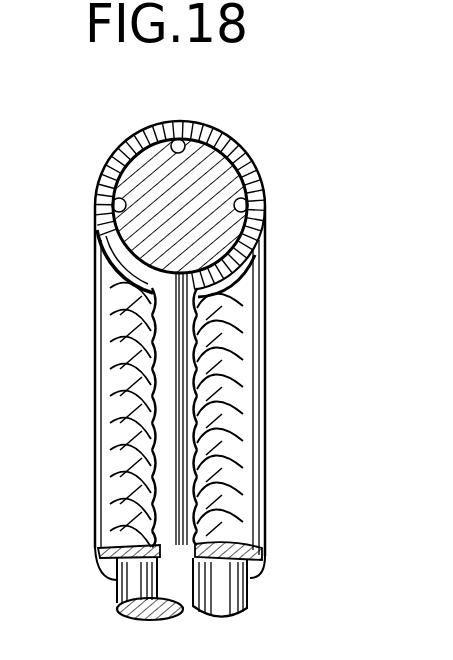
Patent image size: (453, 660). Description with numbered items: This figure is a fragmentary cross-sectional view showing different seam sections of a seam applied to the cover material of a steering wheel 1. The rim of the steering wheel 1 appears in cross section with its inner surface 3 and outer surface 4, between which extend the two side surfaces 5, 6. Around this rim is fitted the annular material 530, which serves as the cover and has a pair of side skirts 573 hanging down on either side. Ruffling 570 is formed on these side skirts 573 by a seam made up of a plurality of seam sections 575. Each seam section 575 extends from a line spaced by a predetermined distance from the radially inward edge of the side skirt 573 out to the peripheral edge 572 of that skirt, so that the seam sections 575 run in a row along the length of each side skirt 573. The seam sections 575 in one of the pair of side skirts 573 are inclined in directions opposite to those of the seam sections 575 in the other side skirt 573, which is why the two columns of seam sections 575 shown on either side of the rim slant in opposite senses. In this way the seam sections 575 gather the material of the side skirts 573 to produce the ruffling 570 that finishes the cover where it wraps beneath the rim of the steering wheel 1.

The steering wheel 1 is at (213, 173).
The inner surface 3 is at (205, 264).
The outer surface 4 is at (167, 128).
The side surface 5 is at (111, 205).
The side surface 6 is at (249, 213).
The annular material 530 is at (107, 158).
The ruffling 570 is at (130, 458).
The peripheral edge 572 is at (140, 525).
The side skirt 573 is at (128, 470).
The seam section 575 is at (135, 373).